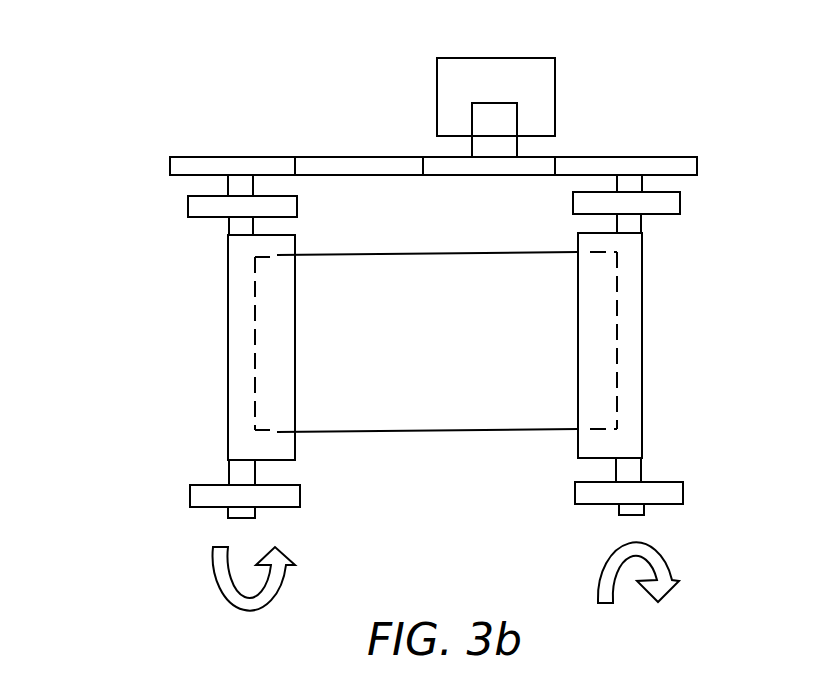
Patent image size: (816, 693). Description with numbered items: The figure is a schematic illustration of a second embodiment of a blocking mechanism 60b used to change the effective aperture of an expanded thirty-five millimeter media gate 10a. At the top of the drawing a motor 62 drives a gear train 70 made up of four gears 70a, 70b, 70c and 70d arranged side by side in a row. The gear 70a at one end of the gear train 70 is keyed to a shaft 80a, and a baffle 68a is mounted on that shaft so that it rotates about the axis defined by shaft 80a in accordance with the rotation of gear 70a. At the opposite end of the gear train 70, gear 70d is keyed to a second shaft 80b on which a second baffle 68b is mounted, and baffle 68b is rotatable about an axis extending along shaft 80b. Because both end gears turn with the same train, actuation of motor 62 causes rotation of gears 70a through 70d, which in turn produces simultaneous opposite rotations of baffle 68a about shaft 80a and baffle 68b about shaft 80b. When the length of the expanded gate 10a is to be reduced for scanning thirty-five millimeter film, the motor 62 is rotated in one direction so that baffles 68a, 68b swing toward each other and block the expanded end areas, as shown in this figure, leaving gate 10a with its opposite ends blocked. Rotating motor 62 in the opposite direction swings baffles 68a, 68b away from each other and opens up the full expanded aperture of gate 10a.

The expanded 35 mm gate 10a is at (450, 430).
The blocking mechanism 60b is at (404, 393).
The motor 62 is at (542, 83).
The baffle 68a is at (235, 285).
The baffle 68b is at (632, 388).
The gear train 70 is at (457, 98).
The gear 70a is at (235, 166).
The gear 70b is at (413, 167).
The gear 70c is at (543, 163).
The gear 70d is at (657, 163).
The shaft 80a is at (227, 228).
The shaft 80b is at (642, 182).